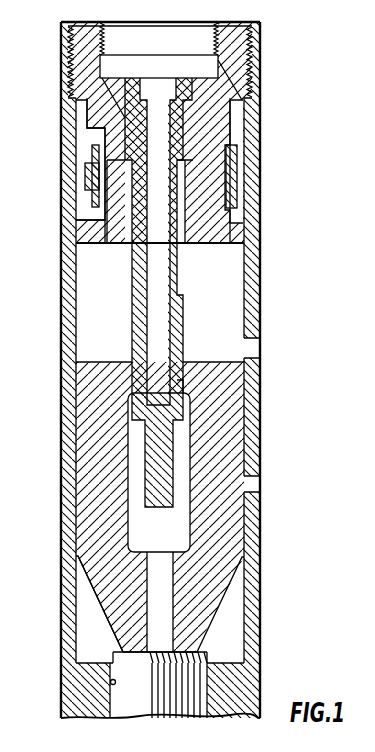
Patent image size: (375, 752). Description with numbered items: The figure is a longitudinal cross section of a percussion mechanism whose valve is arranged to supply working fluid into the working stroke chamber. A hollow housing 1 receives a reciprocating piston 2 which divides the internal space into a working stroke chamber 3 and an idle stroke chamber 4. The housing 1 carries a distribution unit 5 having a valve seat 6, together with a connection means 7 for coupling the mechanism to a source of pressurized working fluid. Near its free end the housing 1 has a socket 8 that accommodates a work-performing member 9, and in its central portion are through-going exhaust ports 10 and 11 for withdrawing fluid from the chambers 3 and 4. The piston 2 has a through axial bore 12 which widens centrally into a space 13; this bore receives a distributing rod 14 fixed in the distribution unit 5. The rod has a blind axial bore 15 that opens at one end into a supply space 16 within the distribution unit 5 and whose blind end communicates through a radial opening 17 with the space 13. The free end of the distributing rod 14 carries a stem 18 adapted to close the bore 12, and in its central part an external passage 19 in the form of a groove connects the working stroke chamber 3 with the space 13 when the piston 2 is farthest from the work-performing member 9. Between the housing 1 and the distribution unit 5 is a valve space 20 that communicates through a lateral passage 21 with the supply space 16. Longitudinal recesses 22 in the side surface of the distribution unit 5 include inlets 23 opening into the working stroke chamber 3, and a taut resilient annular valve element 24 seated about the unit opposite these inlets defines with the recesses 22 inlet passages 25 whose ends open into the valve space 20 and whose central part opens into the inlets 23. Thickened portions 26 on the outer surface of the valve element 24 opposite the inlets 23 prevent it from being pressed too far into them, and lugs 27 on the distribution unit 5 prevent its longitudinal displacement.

The hollow housing 1 is at (68, 608).
The reciprocating piston 2 is at (82, 377).
The working stroke chamber 3 is at (80, 298).
The idle stroke chamber 4 is at (83, 577).
The distribution unit 5 is at (209, 118).
The valve seat 6 is at (98, 143).
The connection means 7 is at (253, 35).
The socket 8 is at (110, 682).
The work-performing member 9 is at (118, 700).
The exhaust port 10 is at (250, 348).
The exhaust port 11 is at (252, 490).
The through axial bore 12 is at (160, 605).
The space 13 is at (182, 530).
The distributing rod 14 is at (182, 305).
The blind axial bore 15 is at (160, 333).
The supply space 16 is at (207, 65).
The radial opening 17 is at (177, 388).
The stem 18 is at (160, 437).
The external passage 19 is at (177, 262).
The valve space 20 is at (68, 103).
The lateral passage 21 is at (97, 83).
The longitudinal recesses 22 is at (97, 130).
The inlets 23 is at (117, 182).
The resilient annular valve element 24 is at (83, 155).
The inlet passages 25 is at (85, 223).
The thickened portions 26 is at (88, 178).
The lugs 27 is at (230, 140).